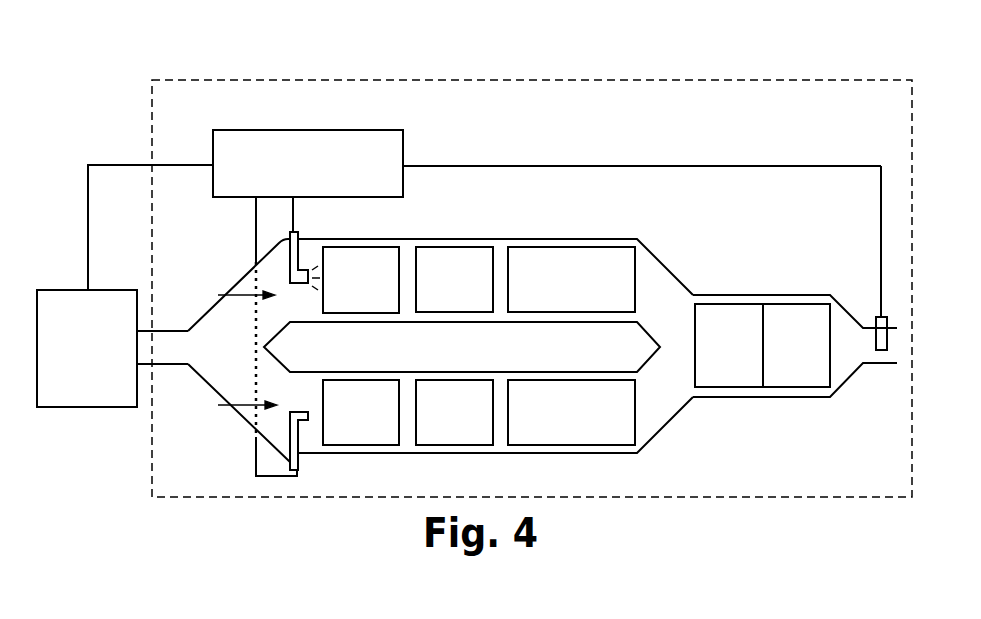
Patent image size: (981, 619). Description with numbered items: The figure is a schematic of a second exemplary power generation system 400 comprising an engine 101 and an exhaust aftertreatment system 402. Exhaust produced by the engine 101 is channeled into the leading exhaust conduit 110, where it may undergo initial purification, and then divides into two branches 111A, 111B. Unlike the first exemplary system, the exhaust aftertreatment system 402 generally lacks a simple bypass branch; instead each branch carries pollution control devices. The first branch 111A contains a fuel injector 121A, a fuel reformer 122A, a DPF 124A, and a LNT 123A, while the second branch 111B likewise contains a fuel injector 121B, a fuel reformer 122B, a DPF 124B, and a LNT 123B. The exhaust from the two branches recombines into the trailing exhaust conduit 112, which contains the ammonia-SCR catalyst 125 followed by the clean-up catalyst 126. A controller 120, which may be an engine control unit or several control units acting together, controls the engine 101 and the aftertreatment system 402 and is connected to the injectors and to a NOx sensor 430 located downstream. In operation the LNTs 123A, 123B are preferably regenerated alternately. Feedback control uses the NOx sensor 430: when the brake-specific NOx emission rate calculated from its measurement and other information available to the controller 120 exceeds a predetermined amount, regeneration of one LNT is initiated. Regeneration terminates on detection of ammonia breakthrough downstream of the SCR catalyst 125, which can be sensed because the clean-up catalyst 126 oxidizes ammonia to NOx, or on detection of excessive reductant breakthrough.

The power generation system 400 is at (645, 46).
The exhaust aftertreatment system 402 is at (712, 97).
The engine 101 is at (106, 393).
The leading exhaust conduit 110 is at (168, 355).
The first branch 111A is at (426, 285).
The second branch 111B is at (426, 413).
The controller 120 is at (400, 158).
The first fuel injector 121A is at (292, 258).
The second fuel injector 121B is at (293, 442).
The first fuel reformer 122A is at (373, 258).
The second fuel reformer 122B is at (384, 434).
The first diesel particulate filter 124A is at (463, 255).
The second diesel particulate filter 124B is at (472, 434).
The first lean NOx trap 123A is at (560, 254).
The second lean NOx trap 123B is at (568, 434).
The trailing exhaust conduit 112 is at (743, 390).
The ammonia-SCR catalyst 125 is at (743, 312).
The clean-up catalyst 126 is at (813, 313).
The NOx sensor 430 is at (880, 312).